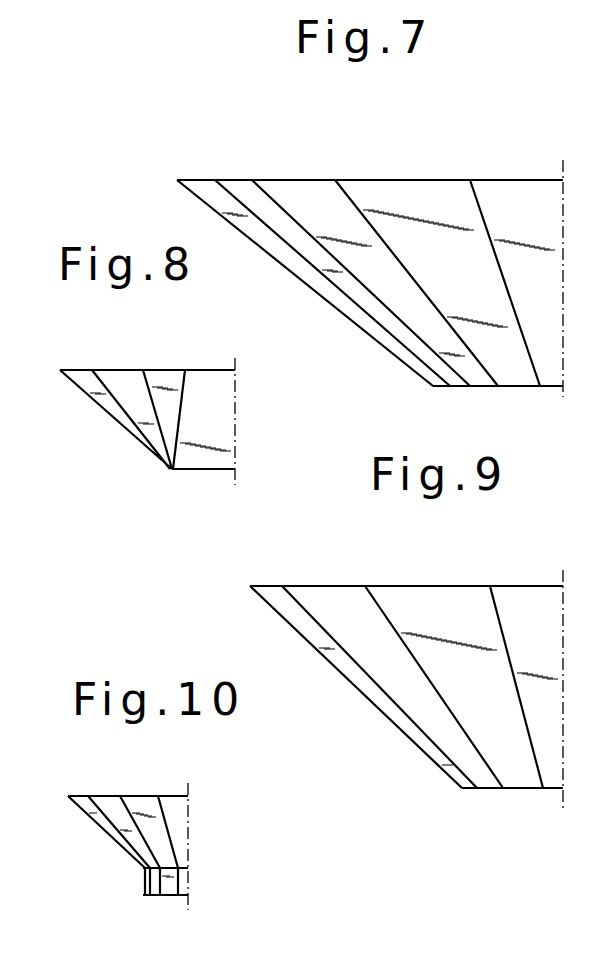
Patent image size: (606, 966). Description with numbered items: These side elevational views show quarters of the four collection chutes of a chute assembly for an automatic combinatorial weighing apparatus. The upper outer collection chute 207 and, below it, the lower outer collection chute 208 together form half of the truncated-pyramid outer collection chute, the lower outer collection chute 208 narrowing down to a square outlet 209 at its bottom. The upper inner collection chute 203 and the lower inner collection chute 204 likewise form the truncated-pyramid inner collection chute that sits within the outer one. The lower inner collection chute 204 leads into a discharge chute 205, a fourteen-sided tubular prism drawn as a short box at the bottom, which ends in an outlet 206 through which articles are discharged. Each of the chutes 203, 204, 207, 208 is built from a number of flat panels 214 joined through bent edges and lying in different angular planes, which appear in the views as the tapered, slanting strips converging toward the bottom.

In FIG. 7, the upper outer collection chute 207 is at (477, 155).
In FIG. 7, the flat panels 214 is at (390, 195).
In FIG. 8, the flat panels 214 is at (122, 382).
In FIG. 9, the flat panels 214 is at (530, 600).
In FIG. 10, the flat panels 214 is at (107, 805).
In FIG. 8, the lower outer collection chute 208 is at (247, 423).
In FIG. 8, the square outlet 209 is at (205, 475).
In FIG. 9, the upper inner collection chute 203 is at (496, 551).
In FIG. 10, the lower inner collection chute 204 is at (138, 777).
In FIG. 10, the discharge chute 205 is at (142, 878).
In FIG. 10, the outlet 206 is at (170, 898).